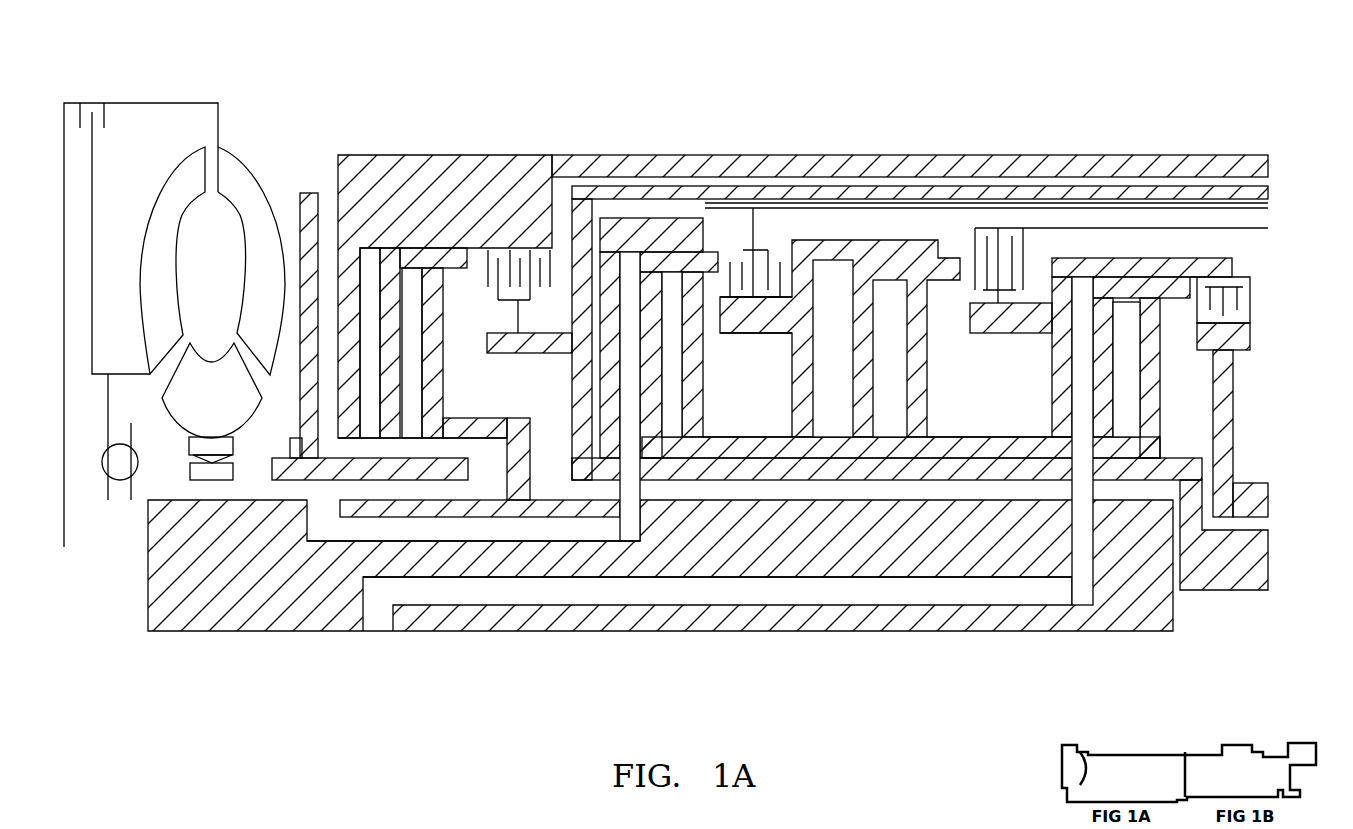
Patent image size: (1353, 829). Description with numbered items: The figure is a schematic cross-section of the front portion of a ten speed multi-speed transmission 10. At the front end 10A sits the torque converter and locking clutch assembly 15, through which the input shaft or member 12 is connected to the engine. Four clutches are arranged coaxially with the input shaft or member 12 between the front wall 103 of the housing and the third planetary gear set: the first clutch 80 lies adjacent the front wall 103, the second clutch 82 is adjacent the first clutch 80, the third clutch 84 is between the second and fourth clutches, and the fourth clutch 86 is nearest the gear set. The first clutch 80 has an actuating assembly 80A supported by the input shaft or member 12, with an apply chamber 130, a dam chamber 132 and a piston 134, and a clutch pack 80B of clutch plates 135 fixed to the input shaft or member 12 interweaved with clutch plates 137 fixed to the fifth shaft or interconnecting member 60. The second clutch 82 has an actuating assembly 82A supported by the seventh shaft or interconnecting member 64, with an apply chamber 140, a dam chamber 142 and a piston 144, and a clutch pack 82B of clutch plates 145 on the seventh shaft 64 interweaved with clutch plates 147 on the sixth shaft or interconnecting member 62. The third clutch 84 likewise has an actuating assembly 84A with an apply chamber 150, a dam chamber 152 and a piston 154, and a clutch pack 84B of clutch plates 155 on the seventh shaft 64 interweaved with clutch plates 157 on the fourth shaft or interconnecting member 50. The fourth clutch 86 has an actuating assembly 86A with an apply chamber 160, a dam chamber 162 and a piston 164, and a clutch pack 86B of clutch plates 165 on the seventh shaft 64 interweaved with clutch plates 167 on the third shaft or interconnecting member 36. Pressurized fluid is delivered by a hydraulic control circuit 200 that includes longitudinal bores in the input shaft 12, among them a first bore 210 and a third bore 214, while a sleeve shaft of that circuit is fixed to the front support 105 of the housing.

The multi-speed transmission 10 is at (849, 91).
The front end 10A is at (313, 150).
The input shaft or member 12 is at (522, 156).
The torque converter and locking clutch assembly 15 is at (236, 137).
The third shaft or interconnecting member 36 is at (1228, 441).
The fourth shaft or interconnecting member 50 is at (1126, 230).
The fifth shaft or interconnecting member 60 is at (1228, 190).
The sixth shaft or interconnecting member 62 is at (1066, 208).
The seventh shaft or interconnecting member 64 is at (760, 437).
The first clutch 80 is at (385, 140).
The actuating assembly 80A is at (413, 141).
The clutch pack 80B is at (458, 277).
The second clutch 82 is at (679, 155).
The actuating assembly 82A is at (654, 141).
The clutch pack 82B is at (772, 235).
The third clutch 84 is at (1000, 155).
The actuating assembly 84A is at (940, 222).
The clutch pack 84B is at (988, 213).
The fourth clutch 86 is at (1266, 248).
The actuating assembly 86A is at (1174, 240).
The clutch pack 86B is at (1266, 287).
The front wall 103 is at (300, 210).
The front support 105 is at (290, 482).
The apply chamber 130 is at (373, 272).
The dam chamber 132 is at (418, 297).
The piston 134 is at (470, 262).
The clutch plates 135 is at (488, 272).
The clutch plates 137 is at (513, 302).
The apply chamber 140 is at (625, 265).
The dam chamber 142 is at (668, 432).
The piston 144 is at (704, 218).
The clutch plates 145 is at (730, 285).
The clutch plates 147 is at (748, 253).
The apply chamber 150 is at (827, 270).
The dam chamber 152 is at (903, 412).
The piston 154 is at (845, 420).
The clutch plates 155 is at (977, 296).
The clutch plates 157 is at (1042, 228).
The apply chamber 160 is at (1077, 347).
The dam chamber 162 is at (1137, 400).
The piston 164 is at (1095, 378).
The clutch plates 165 is at (1250, 303).
The clutch plates 167 is at (1207, 313).
The hydraulic control circuit 200 is at (396, 670).
The first bore 210 is at (420, 538).
The third bore 214 is at (716, 599).